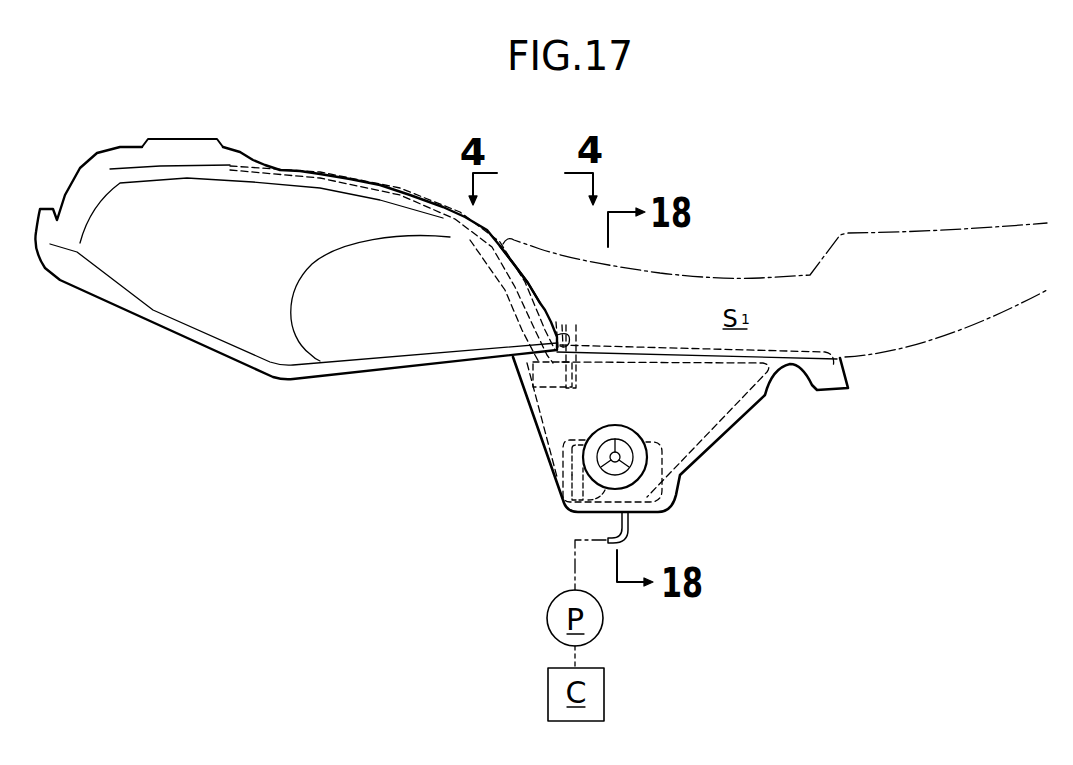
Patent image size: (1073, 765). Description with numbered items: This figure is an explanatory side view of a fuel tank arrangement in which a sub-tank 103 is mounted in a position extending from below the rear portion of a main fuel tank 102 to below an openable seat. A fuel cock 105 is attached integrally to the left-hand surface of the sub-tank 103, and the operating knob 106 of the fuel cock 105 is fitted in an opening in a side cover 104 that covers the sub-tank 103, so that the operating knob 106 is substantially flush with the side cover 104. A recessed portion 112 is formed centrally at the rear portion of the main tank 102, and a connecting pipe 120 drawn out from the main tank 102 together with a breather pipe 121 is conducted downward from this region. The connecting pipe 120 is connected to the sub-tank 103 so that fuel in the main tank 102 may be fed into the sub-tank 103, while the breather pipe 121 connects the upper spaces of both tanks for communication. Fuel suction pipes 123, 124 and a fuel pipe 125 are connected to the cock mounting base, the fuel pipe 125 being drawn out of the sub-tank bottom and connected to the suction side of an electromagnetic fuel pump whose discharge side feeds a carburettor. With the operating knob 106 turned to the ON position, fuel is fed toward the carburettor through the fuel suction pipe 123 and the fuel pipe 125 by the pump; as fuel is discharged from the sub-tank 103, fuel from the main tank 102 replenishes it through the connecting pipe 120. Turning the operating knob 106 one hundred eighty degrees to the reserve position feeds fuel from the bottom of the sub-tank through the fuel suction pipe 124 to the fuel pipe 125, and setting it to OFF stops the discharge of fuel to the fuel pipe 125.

The main fuel tank 102 is at (213, 265).
The sub-tank 103 is at (703, 445).
The side cover 104 is at (746, 406).
The fuel cock 105 is at (583, 443).
The operating knob 106 is at (620, 445).
The recessed portion 112 is at (538, 288).
The connecting pipe 120 is at (540, 387).
The breather pipe 121 is at (427, 198).
The fuel suction pipe 123 is at (560, 453).
The fuel suction pipe 124 is at (557, 488).
The fuel pipe 125 is at (632, 536).